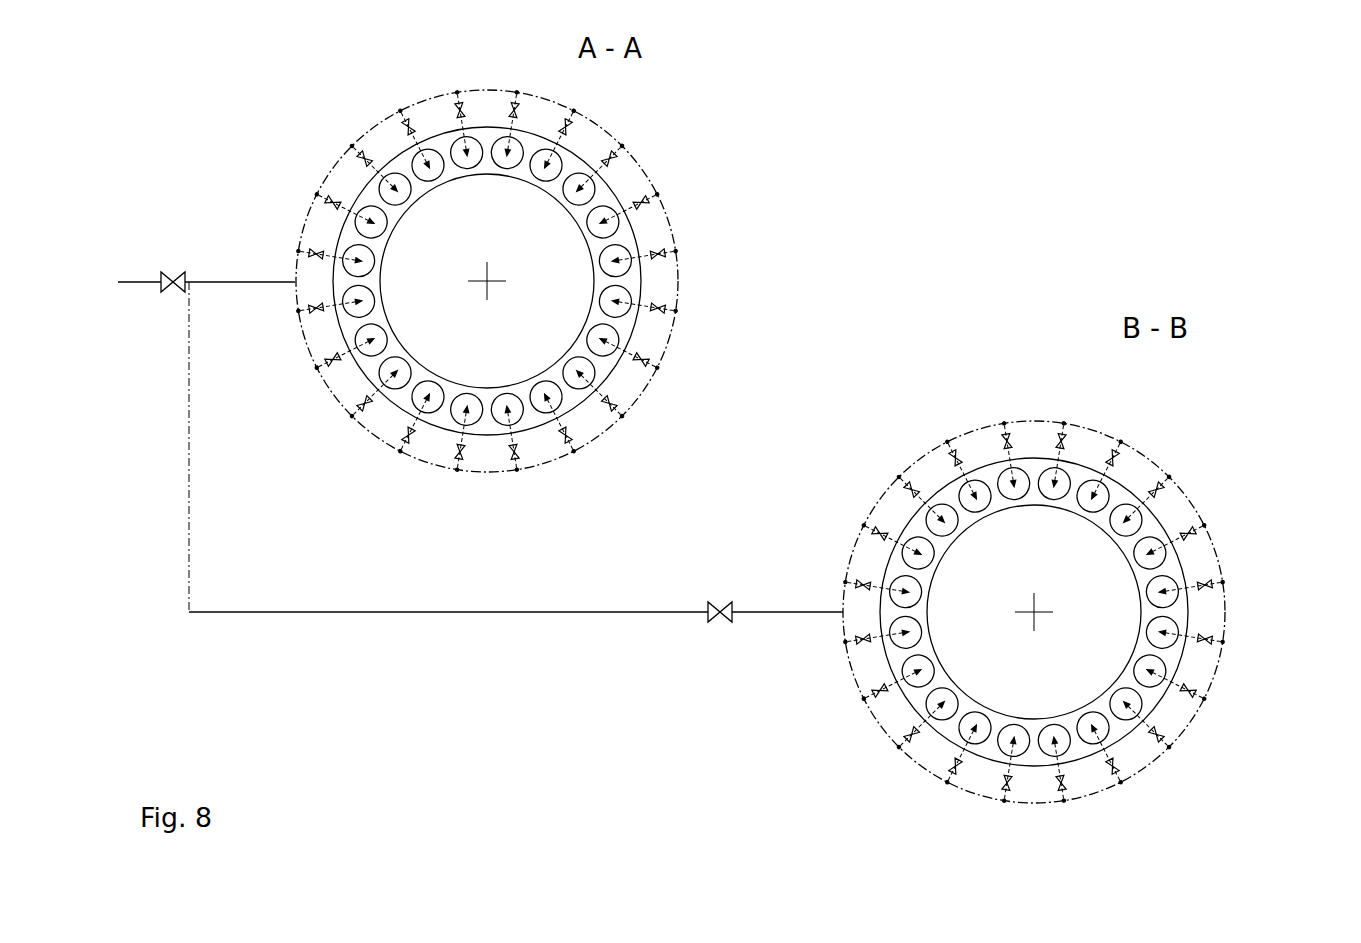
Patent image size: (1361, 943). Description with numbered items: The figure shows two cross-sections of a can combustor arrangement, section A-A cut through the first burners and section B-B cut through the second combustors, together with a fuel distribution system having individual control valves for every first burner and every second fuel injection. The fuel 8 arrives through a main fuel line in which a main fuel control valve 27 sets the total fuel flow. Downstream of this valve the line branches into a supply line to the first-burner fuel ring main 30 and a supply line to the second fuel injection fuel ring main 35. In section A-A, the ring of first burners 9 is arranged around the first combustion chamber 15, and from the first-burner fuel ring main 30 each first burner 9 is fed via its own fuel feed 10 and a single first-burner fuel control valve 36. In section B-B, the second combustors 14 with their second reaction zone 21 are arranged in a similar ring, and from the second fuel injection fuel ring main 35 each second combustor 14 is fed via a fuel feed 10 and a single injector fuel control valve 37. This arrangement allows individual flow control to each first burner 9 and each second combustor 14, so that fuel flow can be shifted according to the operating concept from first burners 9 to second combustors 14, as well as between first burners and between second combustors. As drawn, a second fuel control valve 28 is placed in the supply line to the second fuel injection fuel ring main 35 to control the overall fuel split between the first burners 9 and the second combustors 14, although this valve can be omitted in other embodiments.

The fuel 8 is at (133, 283).
The first burner 9 is at (608, 212).
The fuel feed 10 is at (342, 158).
The second combustor 14 is at (1158, 540).
The first combustion chamber 15 is at (573, 396).
The second reaction zone 21 is at (1120, 728).
The main fuel control valve 27 is at (173, 292).
The second fuel control valve 28 is at (720, 622).
The first-burner fuel ring main 30 is at (370, 432).
The second fuel injection fuel ring main 35 is at (920, 763).
The first-burner fuel control valve 36 is at (332, 382).
The injector fuel control valve 37 is at (878, 713).